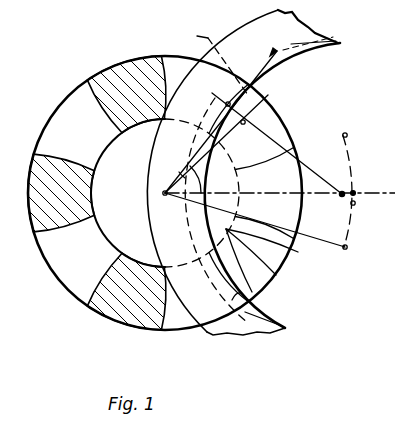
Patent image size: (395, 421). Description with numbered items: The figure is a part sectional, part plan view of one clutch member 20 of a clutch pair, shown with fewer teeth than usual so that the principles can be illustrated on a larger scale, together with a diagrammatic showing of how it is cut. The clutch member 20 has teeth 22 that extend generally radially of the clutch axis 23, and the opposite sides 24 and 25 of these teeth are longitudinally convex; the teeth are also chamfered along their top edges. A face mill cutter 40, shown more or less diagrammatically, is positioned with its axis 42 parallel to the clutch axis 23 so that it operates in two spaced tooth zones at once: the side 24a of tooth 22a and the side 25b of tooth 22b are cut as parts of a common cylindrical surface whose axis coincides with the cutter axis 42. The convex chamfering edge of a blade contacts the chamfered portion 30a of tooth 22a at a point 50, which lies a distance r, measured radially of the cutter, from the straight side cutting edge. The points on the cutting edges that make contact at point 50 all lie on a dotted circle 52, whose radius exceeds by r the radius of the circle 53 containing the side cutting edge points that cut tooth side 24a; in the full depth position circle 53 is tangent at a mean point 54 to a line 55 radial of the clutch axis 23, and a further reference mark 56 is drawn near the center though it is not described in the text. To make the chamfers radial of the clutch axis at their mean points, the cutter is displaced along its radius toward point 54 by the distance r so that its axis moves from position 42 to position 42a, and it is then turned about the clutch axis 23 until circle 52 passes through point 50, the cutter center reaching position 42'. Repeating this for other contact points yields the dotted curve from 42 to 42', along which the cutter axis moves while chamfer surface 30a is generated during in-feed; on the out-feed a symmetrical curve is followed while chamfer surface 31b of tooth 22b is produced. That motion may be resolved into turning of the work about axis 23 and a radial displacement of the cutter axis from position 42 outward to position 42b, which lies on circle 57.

The clutch member 20 is at (72, 290).
The teeth 22 is at (116, 310).
The tooth 22a is at (268, 118).
The tooth 22b is at (270, 271).
The clutch axis 23 is at (162, 192).
The tooth side 24 is at (181, 322).
The tooth side 24a is at (211, 171).
The tooth side 25 is at (106, 260).
The tooth side 25b is at (232, 300).
The chamfered portion 30a is at (260, 97).
The chamfer surface 31b is at (258, 292).
The face mill cutter 40 is at (239, 44).
The cutter axis 42 is at (280, 145).
The cutter axis position 42' is at (275, 232).
The cutter axis position 42a is at (355, 204).
The cutter axis position 42b is at (355, 193).
The point of contact 50 is at (245, 128).
The circle 52 is at (312, 33).
The circle 53 is at (322, 50).
The mean point 54 is at (213, 96).
The radial line 55 is at (176, 172).
The angle 56 is at (200, 174).
The circle 57 is at (347, 165).
The radial distance r is at (327, 36).